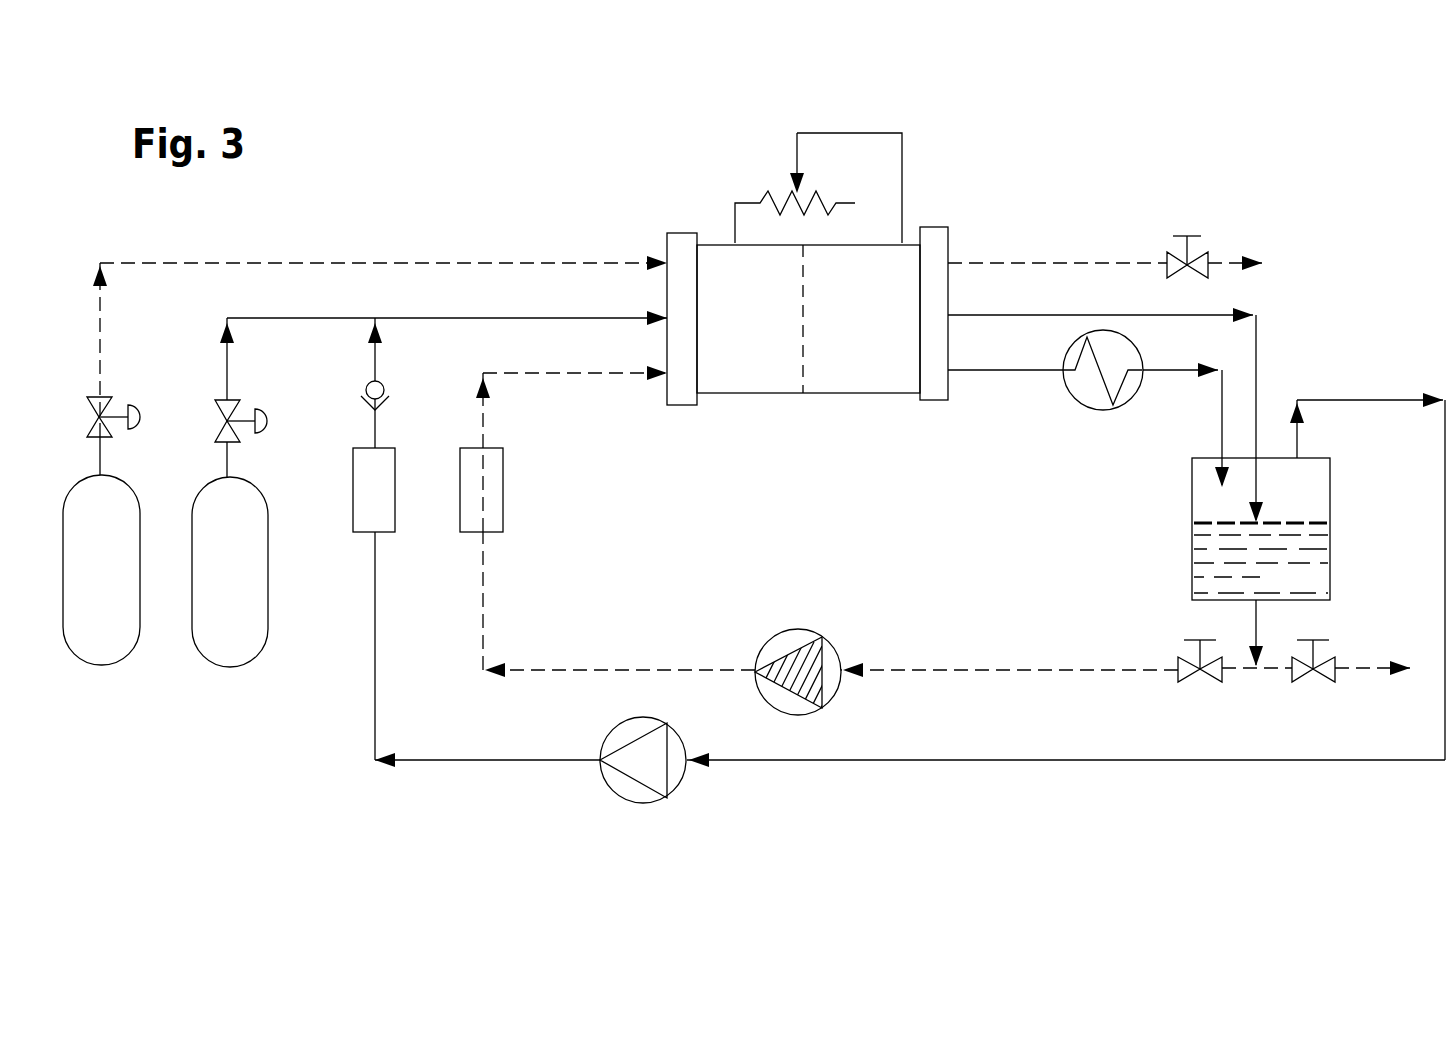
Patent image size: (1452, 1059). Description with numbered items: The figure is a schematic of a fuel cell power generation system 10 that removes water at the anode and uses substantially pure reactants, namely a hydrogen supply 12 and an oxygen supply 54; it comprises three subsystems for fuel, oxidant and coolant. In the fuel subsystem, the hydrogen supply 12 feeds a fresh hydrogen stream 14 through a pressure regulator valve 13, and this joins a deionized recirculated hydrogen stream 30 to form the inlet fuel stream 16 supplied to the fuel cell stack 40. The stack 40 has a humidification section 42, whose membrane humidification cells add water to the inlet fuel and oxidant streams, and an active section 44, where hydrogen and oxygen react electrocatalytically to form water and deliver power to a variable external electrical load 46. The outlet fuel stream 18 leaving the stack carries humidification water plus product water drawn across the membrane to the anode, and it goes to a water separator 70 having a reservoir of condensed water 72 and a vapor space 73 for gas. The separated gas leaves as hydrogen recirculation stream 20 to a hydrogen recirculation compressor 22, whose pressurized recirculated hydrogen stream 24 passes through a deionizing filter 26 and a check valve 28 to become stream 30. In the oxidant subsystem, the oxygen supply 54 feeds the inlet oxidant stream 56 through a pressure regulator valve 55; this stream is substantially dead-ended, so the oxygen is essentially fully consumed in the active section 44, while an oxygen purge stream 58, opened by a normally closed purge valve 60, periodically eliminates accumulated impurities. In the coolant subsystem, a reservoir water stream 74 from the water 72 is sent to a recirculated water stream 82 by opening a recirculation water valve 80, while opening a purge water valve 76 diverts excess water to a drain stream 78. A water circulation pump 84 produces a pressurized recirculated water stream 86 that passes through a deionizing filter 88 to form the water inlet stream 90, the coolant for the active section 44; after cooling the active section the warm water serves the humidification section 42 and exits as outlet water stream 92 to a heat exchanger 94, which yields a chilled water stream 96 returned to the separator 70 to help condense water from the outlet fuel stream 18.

The fuel cell power generation system 10 is at (372, 230).
The hydrogen supply 12 is at (267, 620).
The pressure regulator valve 13 is at (240, 402).
The fresh hydrogen stream 14 is at (325, 318).
The inlet fuel stream 16 is at (468, 318).
The outlet fuel stream 18 is at (1256, 348).
The hydrogen recirculation stream 20 is at (1300, 441).
The hydrogen recirculation compressor 22 is at (675, 726).
The pressurized recirculated hydrogen stream 24 is at (375, 720).
The deionizing filter 26 is at (385, 476).
The check valve 28 is at (384, 390).
The deionized recirculated hydrogen stream 30 is at (375, 360).
The fuel cell stack 40 is at (660, 214).
The humidification section 42 is at (731, 385).
The active section 44 is at (870, 385).
The variable external electrical load 46 is at (915, 160).
The oxygen supply 54 is at (128, 650).
The pressure regulator valve 55 is at (88, 412).
The inlet oxidant stream 56 is at (238, 263).
The oxygen purge stream 58 is at (1025, 263).
The purge valve 60 is at (1200, 252).
The water separator 70 is at (1165, 512).
The water 72 is at (1320, 560).
The vapor space 73 is at (1318, 483).
The reservoir water stream 74 is at (1257, 622).
The purge water valve 76 is at (1326, 683).
The drain stream 78 is at (1357, 665).
The recirculation water valve 80 is at (1211, 683).
The recirculated water stream 82 is at (1003, 676).
The water circulation pump 84 is at (755, 652).
The pressurized recirculated water stream 86 is at (570, 676).
The deionizing filter 88 is at (490, 486).
The water inlet stream 90 is at (640, 370).
The outlet water stream 92 is at (1003, 370).
The heat exchanger 94 is at (1065, 384).
The chilled water stream 96 is at (1220, 420).